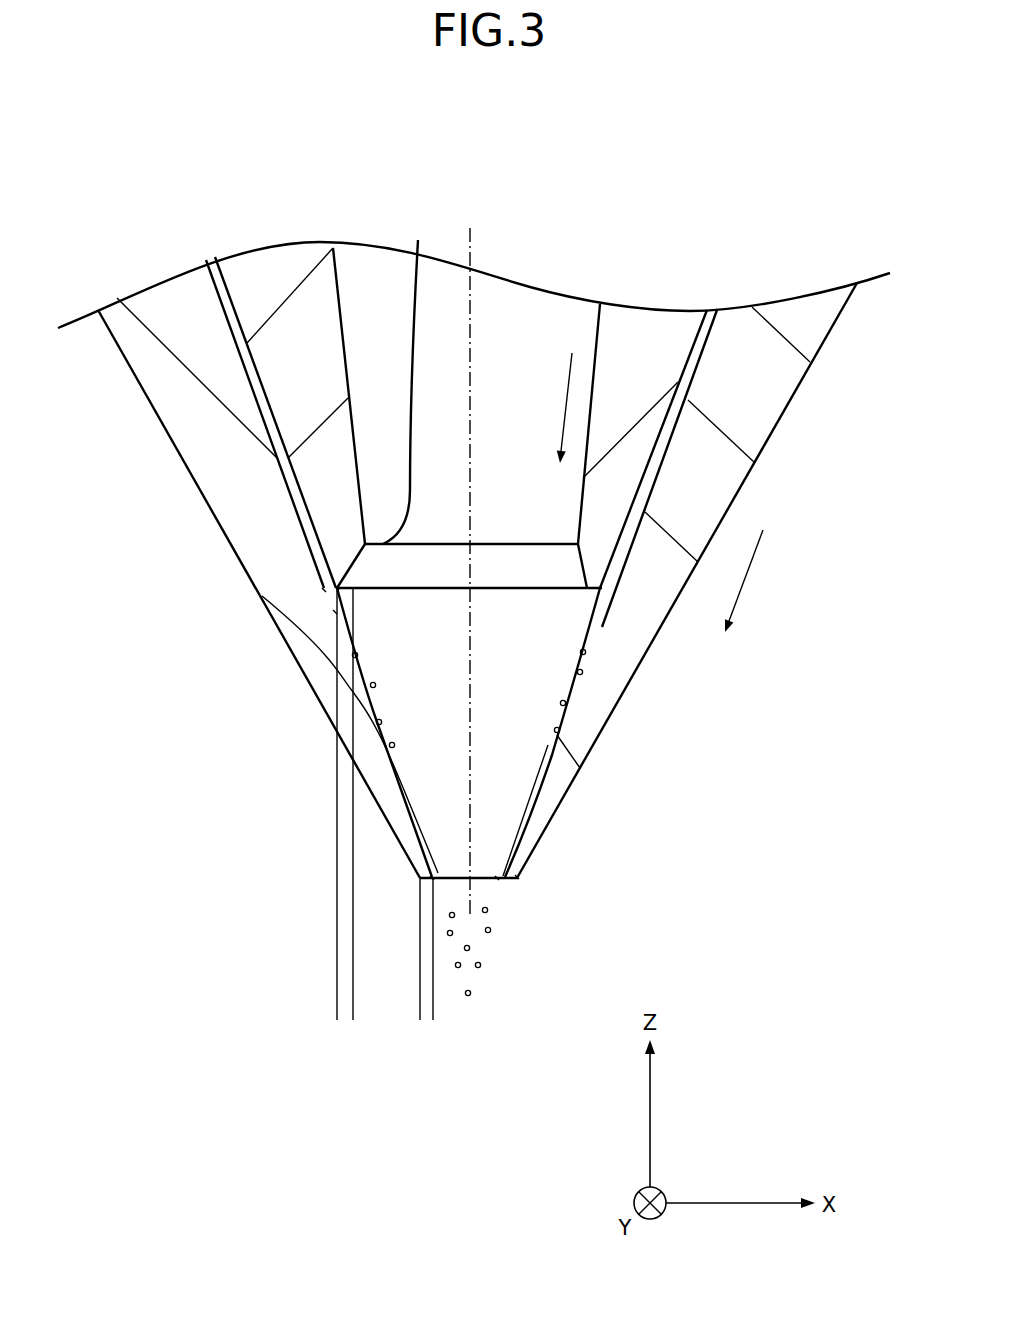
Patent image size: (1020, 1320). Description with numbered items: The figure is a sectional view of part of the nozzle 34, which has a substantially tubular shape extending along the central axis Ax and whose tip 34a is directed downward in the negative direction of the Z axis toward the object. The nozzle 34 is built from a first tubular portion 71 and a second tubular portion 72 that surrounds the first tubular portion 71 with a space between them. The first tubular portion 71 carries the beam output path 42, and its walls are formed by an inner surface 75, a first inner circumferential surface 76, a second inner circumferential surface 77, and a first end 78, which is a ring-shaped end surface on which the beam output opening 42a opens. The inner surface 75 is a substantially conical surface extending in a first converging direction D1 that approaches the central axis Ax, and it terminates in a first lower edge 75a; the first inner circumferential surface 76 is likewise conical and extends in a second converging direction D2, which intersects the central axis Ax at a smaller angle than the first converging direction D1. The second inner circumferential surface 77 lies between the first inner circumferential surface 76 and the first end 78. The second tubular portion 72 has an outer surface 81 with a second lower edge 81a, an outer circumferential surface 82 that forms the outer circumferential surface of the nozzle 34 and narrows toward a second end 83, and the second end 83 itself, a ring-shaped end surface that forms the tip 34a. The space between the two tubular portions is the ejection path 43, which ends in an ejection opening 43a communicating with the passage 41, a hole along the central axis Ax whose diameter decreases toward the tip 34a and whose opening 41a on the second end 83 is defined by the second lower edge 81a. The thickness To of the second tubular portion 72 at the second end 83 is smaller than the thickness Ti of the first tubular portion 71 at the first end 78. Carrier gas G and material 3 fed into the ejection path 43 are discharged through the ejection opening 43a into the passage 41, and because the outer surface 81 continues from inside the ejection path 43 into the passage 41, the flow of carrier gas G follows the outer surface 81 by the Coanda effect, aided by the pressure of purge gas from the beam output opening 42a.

The material 3 is at (471, 996).
The nozzle 34 is at (128, 122).
The tip 34a is at (443, 887).
The passage 41 is at (582, 695).
The opening 41a is at (484, 889).
The beam output path 42 is at (540, 288).
The beam output opening 42a is at (594, 628).
The ejection path 43 is at (274, 479).
The ejection opening 43a is at (314, 590).
The first tubular portion 71 is at (278, 263).
The second tubular portion 72 is at (163, 293).
The inner surface 75 is at (255, 378).
The first lower edge 75a is at (337, 590).
The first inner circumferential surface 76 is at (343, 277).
The second inner circumferential surface 77 is at (476, 400).
The first end 78 is at (335, 612).
The outer surface 81 is at (228, 287).
The second lower edge 81a is at (503, 891).
The outer circumferential surface 82 is at (795, 390).
The second end 83 is at (507, 878).
The carrier gas G is at (407, 800).
The thickness of the first tubular portion Ti is at (315, 1010).
The thickness of the second tubular portion To is at (396, 1010).
The central axis Ax is at (468, 228).
The first converging direction D1 is at (750, 575).
The second converging direction D2 is at (572, 383).